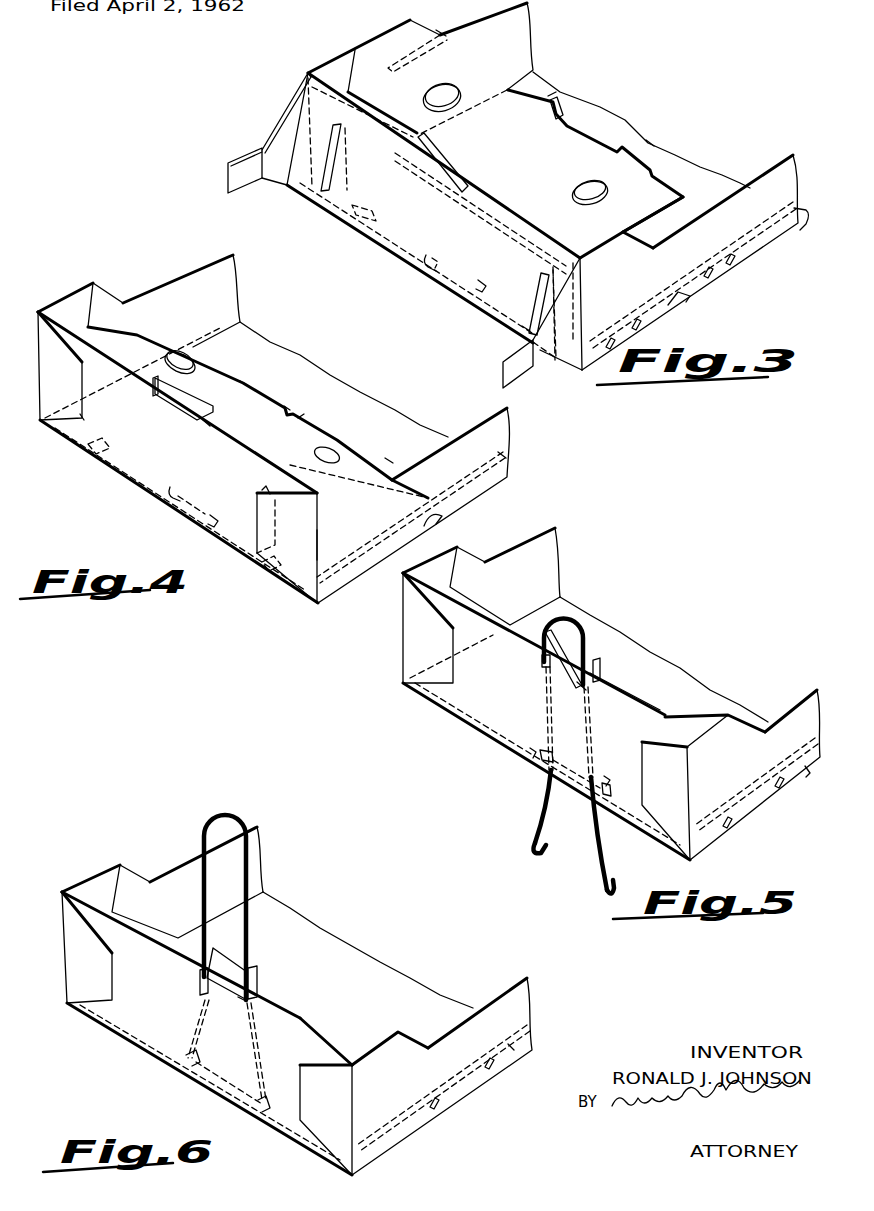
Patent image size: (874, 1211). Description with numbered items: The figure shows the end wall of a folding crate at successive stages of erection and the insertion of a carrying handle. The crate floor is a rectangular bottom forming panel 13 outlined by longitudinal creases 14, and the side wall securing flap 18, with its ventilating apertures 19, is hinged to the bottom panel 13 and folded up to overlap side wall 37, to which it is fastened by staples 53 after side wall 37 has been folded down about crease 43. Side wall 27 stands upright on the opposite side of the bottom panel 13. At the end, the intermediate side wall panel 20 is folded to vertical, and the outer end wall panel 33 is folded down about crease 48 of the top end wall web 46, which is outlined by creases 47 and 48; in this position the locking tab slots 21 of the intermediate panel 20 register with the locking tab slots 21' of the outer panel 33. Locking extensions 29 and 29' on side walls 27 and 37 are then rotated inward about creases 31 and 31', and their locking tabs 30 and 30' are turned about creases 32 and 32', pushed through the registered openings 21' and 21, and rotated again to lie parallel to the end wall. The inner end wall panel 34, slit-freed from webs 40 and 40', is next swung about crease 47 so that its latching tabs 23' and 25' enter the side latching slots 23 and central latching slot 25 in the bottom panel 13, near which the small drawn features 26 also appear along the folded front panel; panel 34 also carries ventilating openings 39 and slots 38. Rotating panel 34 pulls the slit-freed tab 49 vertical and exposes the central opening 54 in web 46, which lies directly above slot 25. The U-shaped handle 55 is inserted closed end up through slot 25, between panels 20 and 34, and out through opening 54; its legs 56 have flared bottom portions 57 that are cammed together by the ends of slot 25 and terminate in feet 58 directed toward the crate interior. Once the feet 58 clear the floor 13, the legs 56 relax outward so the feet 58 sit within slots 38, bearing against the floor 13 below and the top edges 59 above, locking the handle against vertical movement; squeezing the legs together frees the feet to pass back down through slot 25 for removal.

In FIG. 3, the bottom forming panel 13 is at (712, 187).
In FIG. 4, the bottom forming panel 13 is at (373, 423).
In FIG. 5, the bottom forming panel 13 is at (654, 679).
In FIG. 6, the bottom forming panel 13 is at (352, 971).
In FIG. 3, the longitudinal crease 14 is at (765, 246).
In FIG. 4, the longitudinal crease 14 is at (474, 494).
In FIG. 5, the longitudinal crease 14 is at (755, 775).
In FIG. 6, the longitudinal crease 14 is at (442, 1076).
In FIG. 3, the side wall securing flap 18 is at (803, 226).
In FIG. 4, the side wall securing flap 18 is at (507, 458).
In FIG. 5, the side wall securing flap 18 is at (808, 775).
In FIG. 6, the side wall securing flap 18 is at (512, 1048).
In FIG. 3, the ventilating aperture 19 is at (678, 303).
In FIG. 4, the ventilating aperture 19 is at (436, 524).
In FIG. 3, the intermediate side wall panel 20 is at (493, 225).
In FIG. 4, the intermediate side wall panel 20 is at (204, 421).
In FIG. 5, the intermediate side wall panel 20 is at (579, 683).
In FIG. 6, the intermediate side wall panel 20 is at (208, 994).
In FIG. 3, the locking tab slot 21 is at (452, 242).
In FIG. 4, the locking tab slot 21 is at (271, 477).
In FIG. 3, the locking tab slot 21' is at (440, 210).
In FIG. 3, the side latching slot 23 is at (441, 268).
In FIG. 4, the side latching slot 23 is at (171, 521).
In FIG. 3, the latching tab 23' is at (543, 73).
In FIG. 4, the latching tab 23' is at (326, 405).
In FIG. 3, the central latching slot 25 is at (417, 259).
In FIG. 4, the central latching slot 25 is at (191, 495).
In FIG. 5, the central latching slot 25 is at (576, 764).
In FIG. 6, the central latching slot 25 is at (229, 1078).
In FIG. 3, the latching tab 25' is at (568, 78).
In FIG. 4, the latching tab 25' is at (291, 427).
In FIG. 3, the clip 26 is at (432, 256).
In FIG. 4, the clip 26 is at (170, 488).
In FIG. 5, the clip 26 is at (545, 748).
In FIG. 3, the side wall 27 is at (512, 45).
In FIG. 4, the side wall 27 is at (206, 308).
In FIG. 5, the side wall 27 is at (536, 580).
In FIG. 6, the side wall 27 is at (186, 901).
In FIG. 3, the locking extension 29 is at (280, 144).
In FIG. 4, the locking extension 29 is at (117, 366).
In FIG. 5, the locking extension 29 is at (448, 628).
In FIG. 6, the locking extension 29 is at (87, 947).
In FIG. 3, the end wall locking extension 29' is at (557, 327).
In FIG. 4, the end wall locking extension 29' is at (287, 558).
In FIG. 5, the end wall locking extension 29' is at (666, 801).
In FIG. 6, the end wall locking extension 29' is at (326, 1120).
In FIG. 3, the locking tab 30 is at (361, 268).
In FIG. 4, the locking tab 30' is at (276, 479).
In FIG. 4, the crease 31 is at (29, 349).
In FIG. 4, the crease 31' is at (334, 536).
In FIG. 4, the crease 32 is at (97, 425).
In FIG. 4, the crease 32' is at (241, 519).
In FIG. 3, the outer end wall panel 33 is at (328, 212).
In FIG. 4, the outer end wall panel 33 is at (168, 445).
In FIG. 5, the outer end wall panel 33 is at (505, 691).
In FIG. 6, the outer end wall panel 33 is at (156, 1005).
In FIG. 3, the inner end wall panel 34 is at (526, 168).
In FIG. 4, the inner end wall panel 34 is at (250, 419).
In FIG. 3, the side wall 37 is at (790, 191).
In FIG. 4, the side wall 37 is at (496, 445).
In FIG. 5, the side wall 37 is at (800, 741).
In FIG. 6, the side wall 37 is at (488, 1041).
In FIG. 3, the slot 38 is at (549, 112).
In FIG. 4, the slot 38 is at (289, 412).
In FIG. 3, the ventilating opening 39 is at (447, 107).
In FIG. 4, the ventilating opening 39 is at (172, 360).
In FIG. 3, the web 40 is at (374, 56).
In FIG. 4, the web 40 is at (65, 300).
In FIG. 5, the web 40 is at (430, 564).
In FIG. 6, the web 40 is at (91, 880).
In FIG. 3, the web 40' is at (622, 227).
In FIG. 5, the web 40' is at (715, 731).
In FIG. 6, the web 40' is at (387, 1048).
In FIG. 3, the crease 43 is at (626, 242).
In FIG. 3, the top end wall web 46 is at (540, 226).
In FIG. 4, the top end wall web 46 is at (98, 348).
In FIG. 5, the top end wall web 46 is at (462, 602).
In FIG. 6, the top end wall web 46 is at (132, 927).
In FIG. 5, the crease 47 is at (662, 711).
In FIG. 3, the crease 48 is at (310, 72).
In FIG. 3, the slit-freed tab 49 is at (456, 172).
In FIG. 4, the slit-freed tab 49 is at (182, 386).
In FIG. 5, the slit-freed tab 49 is at (596, 658).
In FIG. 6, the slit-freed tab 49 is at (257, 992).
In FIG. 3, the staple 53 is at (733, 268).
In FIG. 4, the staple 53 is at (340, 578).
In FIG. 5, the staple 53 is at (777, 792).
In FIG. 6, the staple 53 is at (489, 1070).
In FIG. 4, the central opening 54 is at (153, 396).
In FIG. 5, the central opening 54 is at (542, 661).
In FIG. 6, the central opening 54 is at (243, 1001).
In FIG. 5, the handle 55 is at (566, 620).
In FIG. 6, the handle 55 is at (234, 814).
In FIG. 5, the handle leg 56 is at (591, 712).
In FIG. 6, the handle leg 56 is at (246, 879).
In FIG. 5, the bottom portion 57 is at (596, 818).
In FIG. 6, the bottom portion 57 is at (250, 1036).
In FIG. 5, the foot 58 is at (606, 891).
In FIG. 5, the top edge 59 is at (530, 753).
In FIG. 6, the top edge 59 is at (186, 1062).